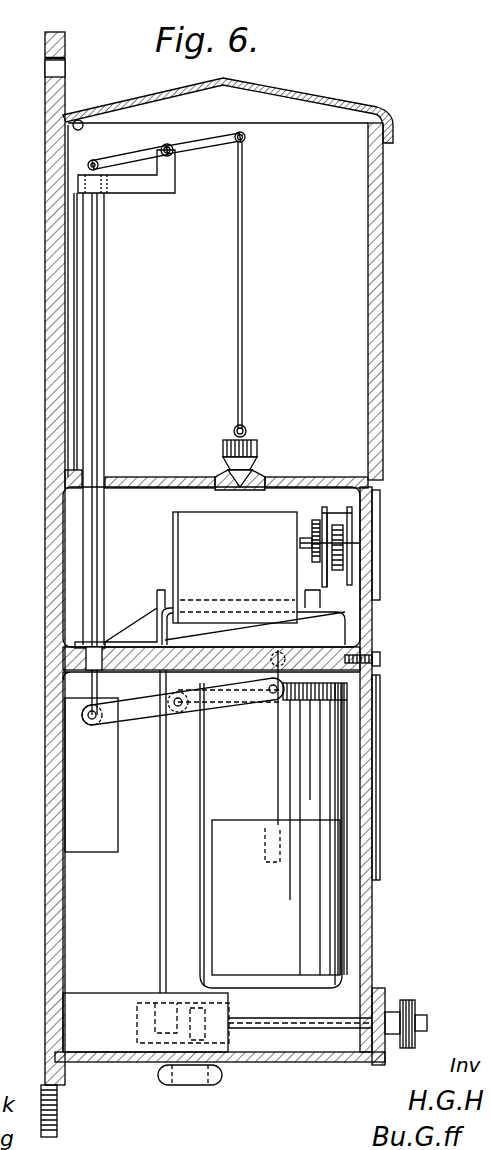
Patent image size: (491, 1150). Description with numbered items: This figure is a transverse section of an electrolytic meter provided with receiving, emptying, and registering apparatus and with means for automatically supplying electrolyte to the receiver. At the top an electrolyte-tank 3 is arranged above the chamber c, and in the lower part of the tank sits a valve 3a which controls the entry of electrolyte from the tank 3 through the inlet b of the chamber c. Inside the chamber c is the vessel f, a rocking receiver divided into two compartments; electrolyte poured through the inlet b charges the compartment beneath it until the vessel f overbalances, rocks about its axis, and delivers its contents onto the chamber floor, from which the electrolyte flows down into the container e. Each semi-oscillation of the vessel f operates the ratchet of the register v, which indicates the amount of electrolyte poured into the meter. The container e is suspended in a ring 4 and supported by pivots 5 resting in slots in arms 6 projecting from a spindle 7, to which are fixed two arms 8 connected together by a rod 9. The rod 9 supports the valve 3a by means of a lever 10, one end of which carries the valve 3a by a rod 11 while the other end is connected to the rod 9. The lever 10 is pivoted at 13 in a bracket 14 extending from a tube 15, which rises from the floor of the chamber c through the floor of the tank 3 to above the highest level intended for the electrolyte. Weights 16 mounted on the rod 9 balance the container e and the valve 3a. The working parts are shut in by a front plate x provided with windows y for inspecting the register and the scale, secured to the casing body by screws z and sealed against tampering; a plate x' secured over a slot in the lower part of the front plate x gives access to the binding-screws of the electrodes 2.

The electrodes 2 is at (276, 897).
The electrolyte-tank 3 is at (216, 441).
The valve 3a is at (246, 470).
The ring 4 is at (318, 702).
The pivots 5 is at (270, 698).
The arms 6 is at (219, 710).
The spindle 7 is at (180, 708).
The arms 8 is at (136, 718).
The rod 9 is at (93, 720).
The lever 10 is at (215, 146).
The rod 11 is at (242, 345).
The pivot 13 is at (165, 144).
The bracket 14 is at (163, 185).
The tube 15 is at (96, 269).
The weights 16 is at (91, 775).
The inlet b is at (226, 478).
The chamber c is at (211, 567).
The container e is at (211, 867).
The vessel f is at (180, 548).
The register v is at (366, 520).
The windows y is at (378, 572).
The screws z is at (386, 655).
The front plate x is at (220, 584).
The plate x' is at (327, 1008).